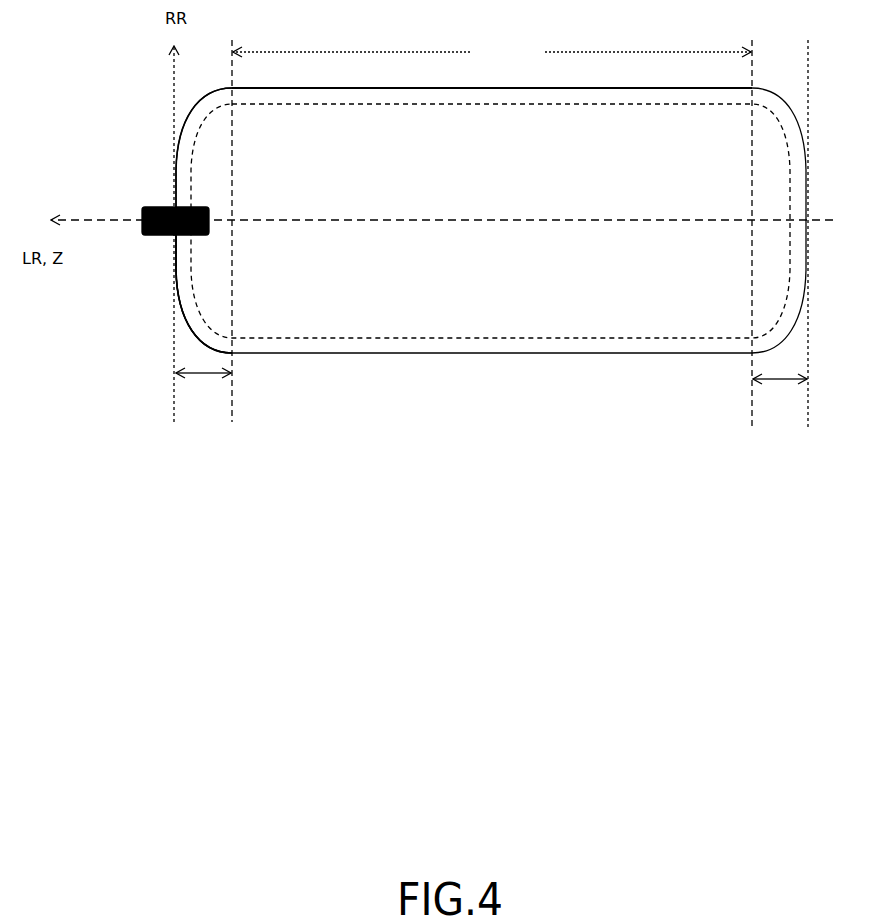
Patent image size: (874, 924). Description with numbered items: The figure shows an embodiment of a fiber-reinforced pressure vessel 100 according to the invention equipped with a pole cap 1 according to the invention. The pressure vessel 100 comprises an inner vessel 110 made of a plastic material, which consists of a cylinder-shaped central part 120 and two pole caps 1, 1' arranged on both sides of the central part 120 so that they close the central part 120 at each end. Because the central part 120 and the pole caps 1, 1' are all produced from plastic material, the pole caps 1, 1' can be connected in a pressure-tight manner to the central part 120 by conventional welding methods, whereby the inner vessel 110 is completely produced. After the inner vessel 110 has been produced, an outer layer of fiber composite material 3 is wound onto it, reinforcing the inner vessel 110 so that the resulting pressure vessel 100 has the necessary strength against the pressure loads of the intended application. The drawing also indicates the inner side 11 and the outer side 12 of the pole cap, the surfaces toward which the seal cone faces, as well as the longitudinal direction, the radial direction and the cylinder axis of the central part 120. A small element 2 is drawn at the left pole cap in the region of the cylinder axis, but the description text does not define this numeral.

The pressure vessel 100 is at (133, 65).
The boss / port fitting 2 is at (155, 205).
The inner side 11 is at (254, 220).
The outer side 12 is at (170, 270).
The outer layer from fiber composite material 3 is at (629, 90).
The inner vessel 110 is at (450, 330).
The cylinder-shaped central part of the inner vessel 120 is at (492, 55).
The pole cap 1 is at (203, 439).
The pole cap 1' is at (780, 433).